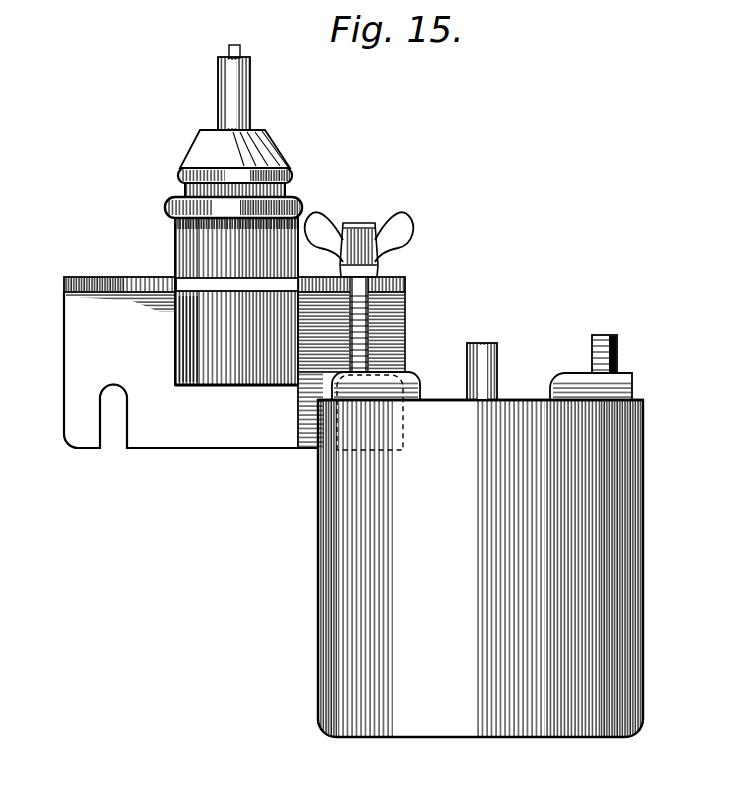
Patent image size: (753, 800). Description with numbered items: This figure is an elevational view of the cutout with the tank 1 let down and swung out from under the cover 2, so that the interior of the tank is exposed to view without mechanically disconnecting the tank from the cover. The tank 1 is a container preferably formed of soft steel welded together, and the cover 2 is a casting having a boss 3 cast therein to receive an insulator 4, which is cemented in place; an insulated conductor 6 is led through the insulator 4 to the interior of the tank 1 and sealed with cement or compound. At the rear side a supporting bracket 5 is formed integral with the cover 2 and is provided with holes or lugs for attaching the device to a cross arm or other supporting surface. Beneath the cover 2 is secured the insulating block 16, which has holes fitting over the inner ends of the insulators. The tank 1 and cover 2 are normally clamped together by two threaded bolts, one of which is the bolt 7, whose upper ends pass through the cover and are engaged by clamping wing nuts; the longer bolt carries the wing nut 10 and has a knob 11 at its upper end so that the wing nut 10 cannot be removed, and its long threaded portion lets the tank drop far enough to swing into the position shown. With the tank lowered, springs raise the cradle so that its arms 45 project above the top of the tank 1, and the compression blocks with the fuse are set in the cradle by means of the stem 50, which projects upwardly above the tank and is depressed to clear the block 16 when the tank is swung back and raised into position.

The tank 1 is at (640, 503).
The cover 2 is at (404, 293).
The boss 3 is at (175, 246).
The insulator 4 is at (278, 150).
The supporting bracket 5 is at (72, 368).
The insulated conductor 6 is at (386, 347).
The bolt 7 is at (616, 367).
The wing nut 10 is at (401, 227).
The knob 11 is at (361, 220).
The insulating block 16 is at (186, 341).
The arm 45 is at (337, 389).
The stem 50 is at (497, 331).